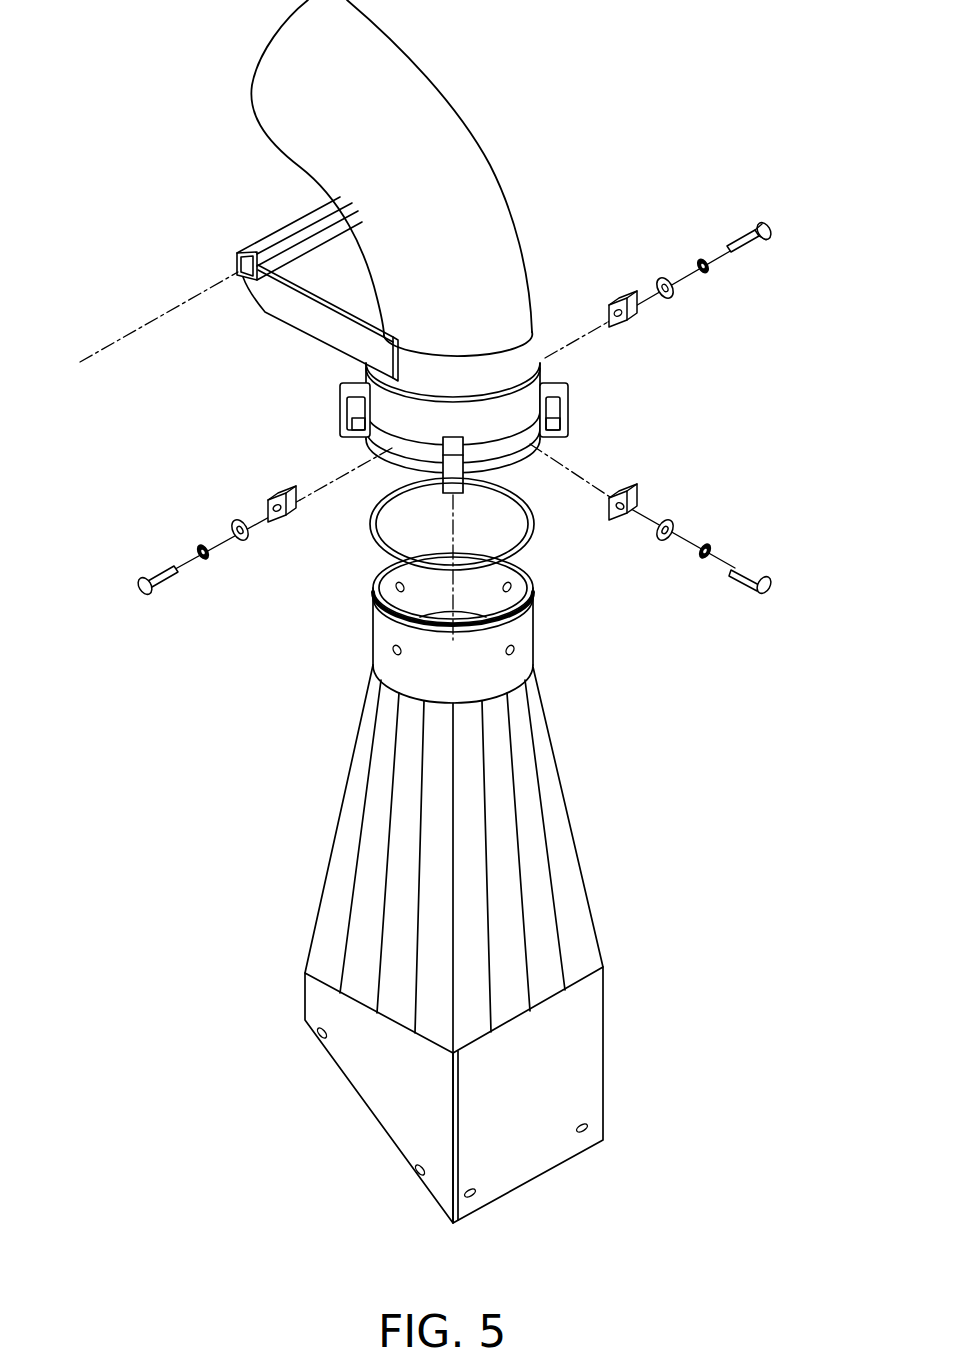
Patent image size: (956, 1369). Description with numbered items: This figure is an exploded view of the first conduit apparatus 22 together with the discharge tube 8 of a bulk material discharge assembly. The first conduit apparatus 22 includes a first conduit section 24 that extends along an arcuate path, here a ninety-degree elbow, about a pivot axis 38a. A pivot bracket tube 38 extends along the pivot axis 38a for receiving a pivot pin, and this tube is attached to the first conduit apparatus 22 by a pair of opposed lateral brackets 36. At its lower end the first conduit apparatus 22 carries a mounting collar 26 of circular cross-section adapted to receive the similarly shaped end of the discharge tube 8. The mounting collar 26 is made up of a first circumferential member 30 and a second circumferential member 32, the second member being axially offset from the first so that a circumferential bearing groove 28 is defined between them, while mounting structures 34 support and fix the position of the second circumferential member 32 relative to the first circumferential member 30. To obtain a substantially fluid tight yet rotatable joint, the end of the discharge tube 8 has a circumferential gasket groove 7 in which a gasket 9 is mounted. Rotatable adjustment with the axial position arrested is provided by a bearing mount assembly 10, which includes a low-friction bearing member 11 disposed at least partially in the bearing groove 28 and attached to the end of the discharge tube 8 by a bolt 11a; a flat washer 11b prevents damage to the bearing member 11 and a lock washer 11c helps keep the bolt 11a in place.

The first conduit apparatus 22 is at (348, 190).
The first conduit section 24 is at (433, 63).
The pivot bracket tube 38 is at (278, 232).
The pivot axis 38a is at (134, 332).
The lateral brackets 36 is at (279, 313).
The mounting collar 26 is at (454, 501).
The first circumferential member 30 is at (340, 418).
The circumferential bearing groove 28 is at (394, 447).
The second circumferential member 32 is at (520, 445).
The mounting structures 34 is at (570, 410).
The bearing mount assembly 10 is at (680, 333).
The bearing member 11 is at (617, 295).
The bolt 11a is at (751, 249).
The flat washer 11b is at (664, 274).
The lock washer 11c is at (707, 274).
The gasket 9 is at (533, 530).
The circumferential gasket groove 7 is at (372, 601).
The discharge tube 8 is at (557, 757).